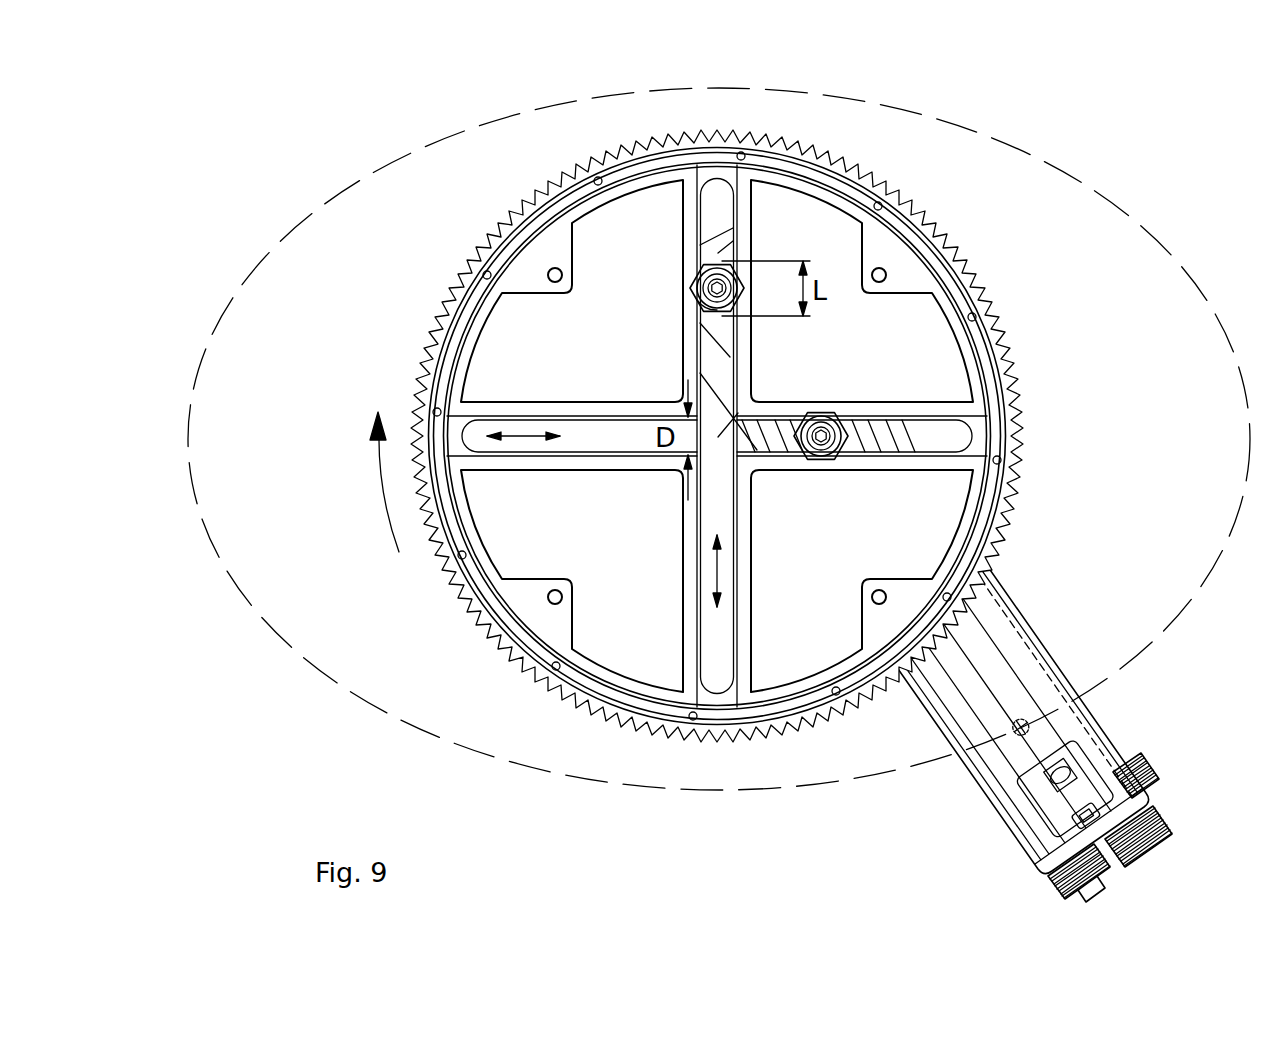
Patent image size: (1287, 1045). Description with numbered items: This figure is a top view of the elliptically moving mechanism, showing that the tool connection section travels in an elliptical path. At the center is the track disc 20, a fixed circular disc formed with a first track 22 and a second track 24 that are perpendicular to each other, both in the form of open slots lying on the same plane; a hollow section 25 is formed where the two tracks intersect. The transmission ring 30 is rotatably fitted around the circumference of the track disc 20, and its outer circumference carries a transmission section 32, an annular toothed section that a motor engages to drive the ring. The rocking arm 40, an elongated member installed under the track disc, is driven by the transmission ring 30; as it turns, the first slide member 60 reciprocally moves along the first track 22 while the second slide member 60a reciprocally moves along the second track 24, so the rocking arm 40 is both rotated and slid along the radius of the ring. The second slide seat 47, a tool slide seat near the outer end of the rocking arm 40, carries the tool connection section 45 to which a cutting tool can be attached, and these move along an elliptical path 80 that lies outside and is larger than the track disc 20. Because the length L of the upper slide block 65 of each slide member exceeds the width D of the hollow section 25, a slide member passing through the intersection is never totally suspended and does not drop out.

The elliptical path 80 is at (1025, 148).
The transmission ring 30 is at (995, 264).
The transmission section 32 is at (1018, 352).
The track disc 20 is at (916, 371).
The first track 22 is at (712, 655).
The second track 24 is at (560, 456).
The hollow section 25 is at (722, 432).
The first slide member 60 is at (699, 287).
The second slide member 60a is at (820, 463).
The upper slide block 65 is at (703, 300).
The rocking arm 40 is at (1032, 705).
The tool connection section 45 is at (1022, 735).
The second slide seat 47 is at (1062, 702).